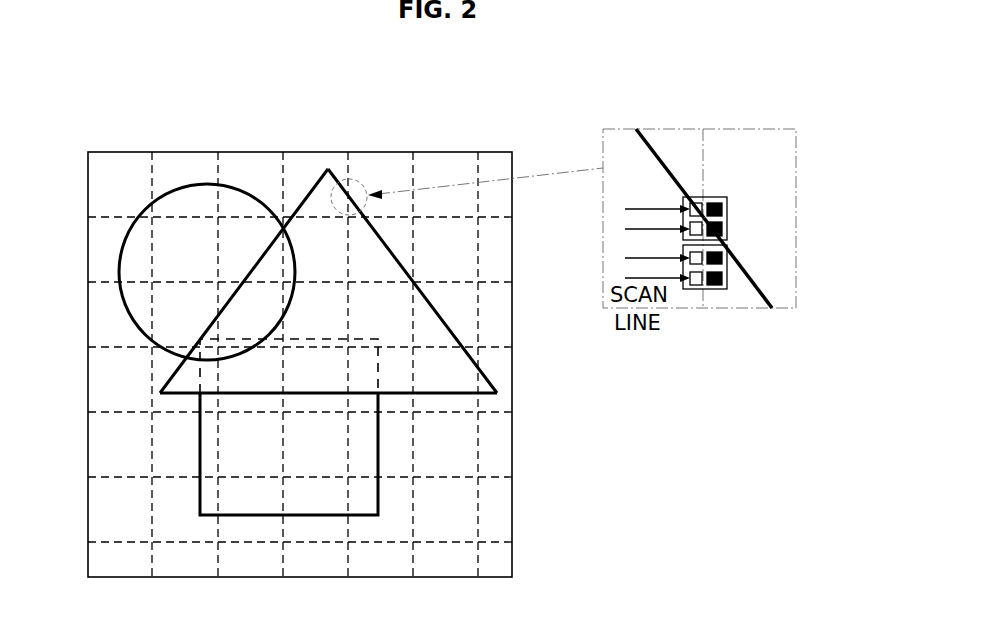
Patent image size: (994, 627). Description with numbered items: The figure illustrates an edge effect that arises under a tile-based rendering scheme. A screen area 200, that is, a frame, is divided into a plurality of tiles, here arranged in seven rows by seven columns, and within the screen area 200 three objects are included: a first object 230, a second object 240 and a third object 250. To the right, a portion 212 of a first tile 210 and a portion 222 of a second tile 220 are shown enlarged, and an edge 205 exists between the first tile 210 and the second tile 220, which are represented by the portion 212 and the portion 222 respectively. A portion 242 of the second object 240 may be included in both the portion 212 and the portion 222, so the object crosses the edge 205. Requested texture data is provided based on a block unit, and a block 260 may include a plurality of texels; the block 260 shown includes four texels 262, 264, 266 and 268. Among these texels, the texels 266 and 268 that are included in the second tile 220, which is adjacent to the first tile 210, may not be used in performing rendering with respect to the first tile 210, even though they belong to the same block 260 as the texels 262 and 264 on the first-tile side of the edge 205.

The screen area 200 is at (88, 152).
The first tile 210 is at (313, 162).
The second tile 220 is at (382, 162).
The first object 230 is at (118, 248).
The second object 240 is at (453, 332).
The third object 250 is at (200, 453).
The portion of first tile 212 is at (626, 140).
The portion of second object 242 is at (758, 285).
The edge 205 is at (707, 142).
The portion of second tile 222 is at (773, 137).
The texel 262 is at (702, 198).
The block 260 is at (727, 198).
The texel 264 is at (683, 218).
The texel 266 is at (727, 208).
The texel 268 is at (727, 227).